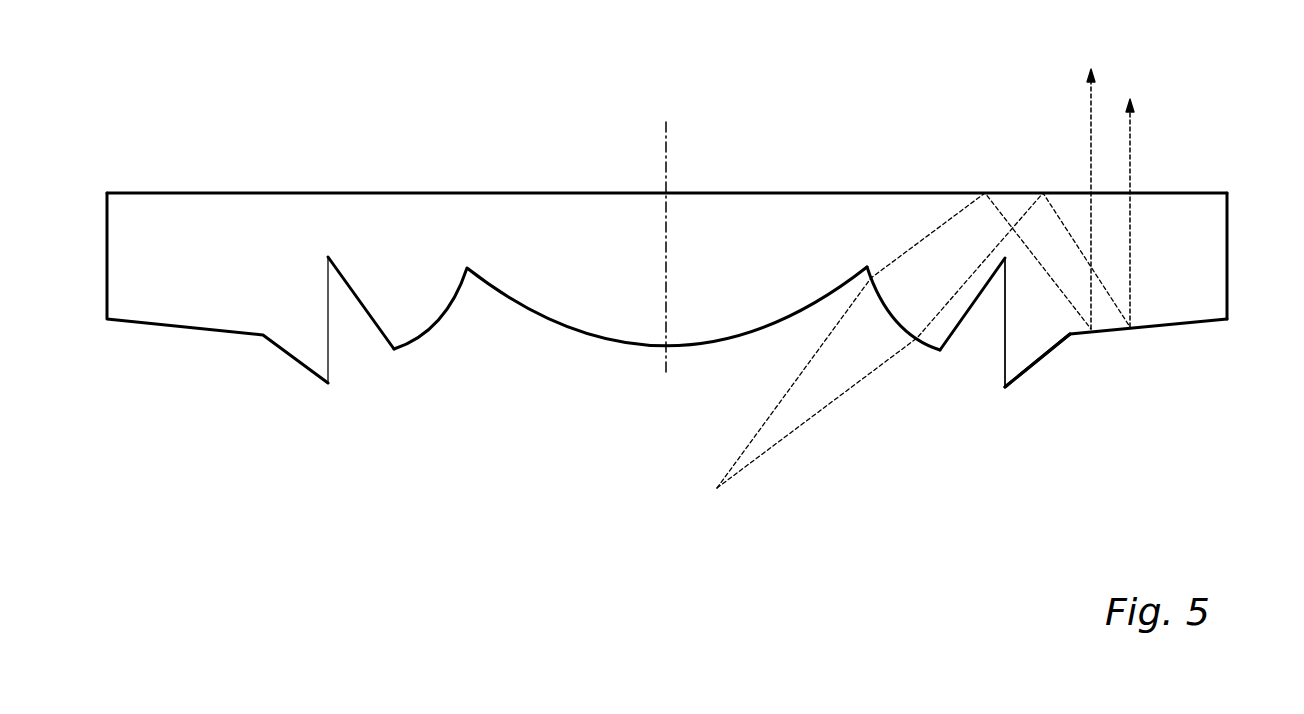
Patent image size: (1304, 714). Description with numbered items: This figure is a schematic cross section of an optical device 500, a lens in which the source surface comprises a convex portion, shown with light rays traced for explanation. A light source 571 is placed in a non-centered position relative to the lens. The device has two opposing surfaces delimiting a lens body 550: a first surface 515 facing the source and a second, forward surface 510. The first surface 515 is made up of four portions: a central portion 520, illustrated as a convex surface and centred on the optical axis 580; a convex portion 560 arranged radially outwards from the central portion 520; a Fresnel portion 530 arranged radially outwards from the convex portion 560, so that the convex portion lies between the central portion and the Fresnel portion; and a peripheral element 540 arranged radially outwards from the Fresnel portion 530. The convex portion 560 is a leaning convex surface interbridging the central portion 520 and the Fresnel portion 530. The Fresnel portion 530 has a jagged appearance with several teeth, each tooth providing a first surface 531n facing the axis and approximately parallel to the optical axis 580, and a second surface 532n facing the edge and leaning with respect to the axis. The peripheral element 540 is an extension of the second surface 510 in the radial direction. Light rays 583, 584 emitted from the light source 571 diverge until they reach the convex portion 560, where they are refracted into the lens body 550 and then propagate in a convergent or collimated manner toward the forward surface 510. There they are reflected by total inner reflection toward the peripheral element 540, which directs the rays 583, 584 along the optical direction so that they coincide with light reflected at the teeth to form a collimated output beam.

The optical device 500 is at (168, 130).
The second surface 510 is at (190, 193).
The first surface 515 is at (327, 385).
The central portion 520 is at (647, 346).
The Fresnel portion 530 is at (982, 402).
The first surface of a tooth 531n is at (1004, 349).
The second surface of a tooth 532n is at (1040, 362).
The peripheral element 540 is at (1172, 328).
The lens body 550 is at (1208, 208).
The convex portion 560 is at (895, 327).
The light source 571 is at (717, 488).
The optical axis 580 is at (666, 138).
The light ray 583 is at (1130, 128).
The light ray 584 is at (1091, 93).